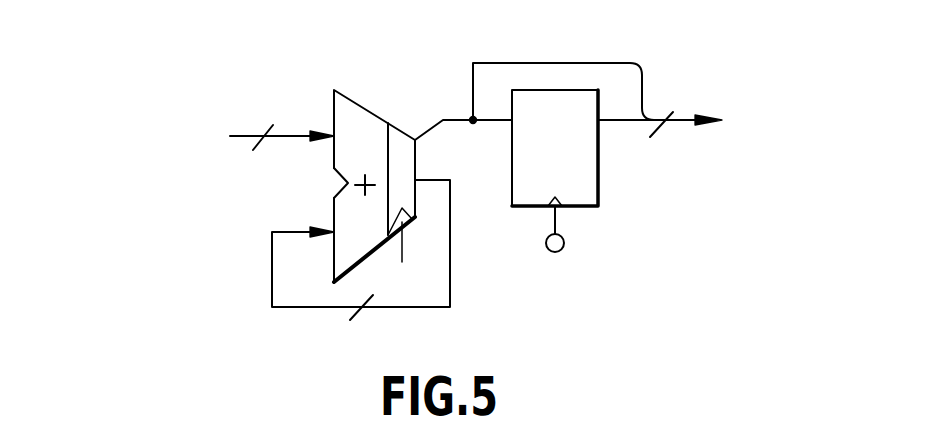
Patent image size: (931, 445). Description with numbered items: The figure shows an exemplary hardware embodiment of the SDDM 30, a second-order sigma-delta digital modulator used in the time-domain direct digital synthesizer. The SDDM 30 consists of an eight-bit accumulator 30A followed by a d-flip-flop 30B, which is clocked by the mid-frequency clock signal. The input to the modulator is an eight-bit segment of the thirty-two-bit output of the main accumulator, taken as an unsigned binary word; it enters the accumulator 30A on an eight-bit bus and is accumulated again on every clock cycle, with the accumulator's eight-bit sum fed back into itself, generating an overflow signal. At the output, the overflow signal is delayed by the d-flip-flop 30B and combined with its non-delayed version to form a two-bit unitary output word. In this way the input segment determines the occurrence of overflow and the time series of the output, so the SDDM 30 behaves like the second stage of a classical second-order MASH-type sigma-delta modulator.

The SDDM 30 is at (708, 268).
The 8-bit accumulator 30A is at (358, 103).
The d-flip-flop 30B is at (598, 178).